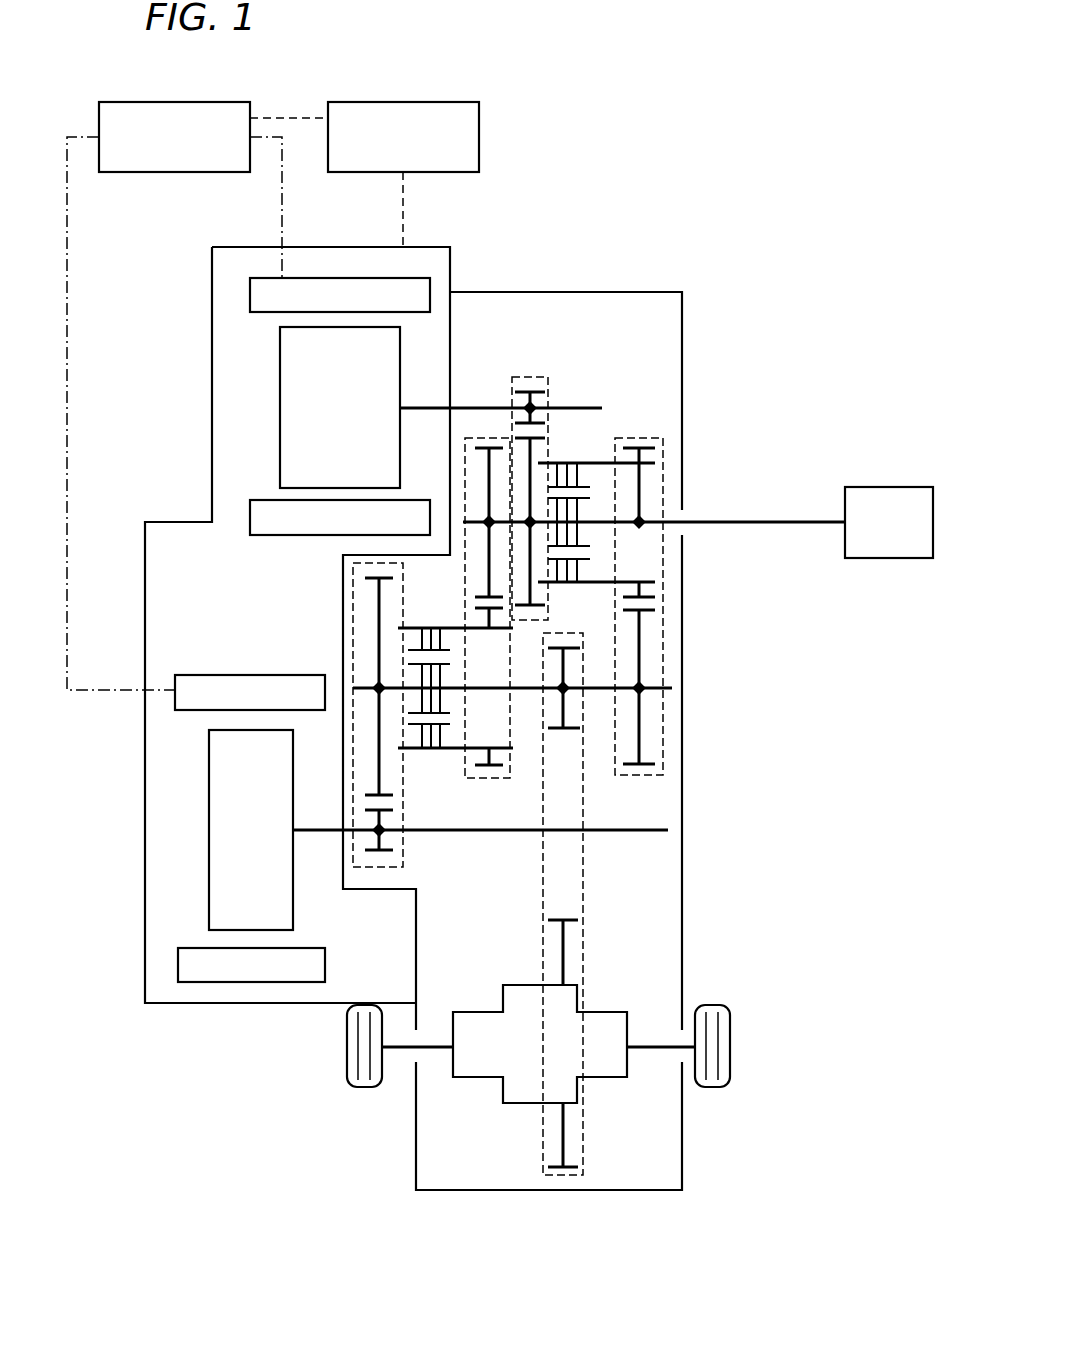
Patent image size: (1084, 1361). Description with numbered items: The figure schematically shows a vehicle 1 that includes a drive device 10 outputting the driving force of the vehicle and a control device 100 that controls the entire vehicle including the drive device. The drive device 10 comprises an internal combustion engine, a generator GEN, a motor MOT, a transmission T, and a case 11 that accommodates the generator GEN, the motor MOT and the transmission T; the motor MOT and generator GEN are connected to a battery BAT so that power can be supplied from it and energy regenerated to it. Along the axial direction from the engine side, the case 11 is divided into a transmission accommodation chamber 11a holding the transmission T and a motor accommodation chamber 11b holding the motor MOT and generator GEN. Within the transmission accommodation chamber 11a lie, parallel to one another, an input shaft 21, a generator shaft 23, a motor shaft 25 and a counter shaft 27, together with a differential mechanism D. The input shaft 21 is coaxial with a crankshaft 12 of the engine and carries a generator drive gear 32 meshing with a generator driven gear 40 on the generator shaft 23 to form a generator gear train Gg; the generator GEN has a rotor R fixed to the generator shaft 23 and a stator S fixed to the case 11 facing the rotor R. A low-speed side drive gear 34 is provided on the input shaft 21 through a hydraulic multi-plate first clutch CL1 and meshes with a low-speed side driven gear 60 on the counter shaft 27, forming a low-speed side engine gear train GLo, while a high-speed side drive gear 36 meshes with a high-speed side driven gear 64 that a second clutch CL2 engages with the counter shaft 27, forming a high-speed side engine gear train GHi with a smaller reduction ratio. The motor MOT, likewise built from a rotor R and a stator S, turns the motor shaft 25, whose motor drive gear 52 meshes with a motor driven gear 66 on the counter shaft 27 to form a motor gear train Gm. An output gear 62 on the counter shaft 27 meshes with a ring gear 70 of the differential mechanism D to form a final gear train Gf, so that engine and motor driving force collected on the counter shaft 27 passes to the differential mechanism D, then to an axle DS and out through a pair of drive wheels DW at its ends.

The vehicle 1 is at (612, 118).
The drive device 10 is at (497, 266).
The control device 100 is at (446, 100).
The case 11 is at (682, 322).
The transmission accommodation chamber 11a is at (660, 880).
The motor accommodation chamber 11b is at (186, 553).
The crankshaft 12 is at (783, 521).
The input shaft 21 is at (670, 521).
The generator shaft 23 is at (602, 408).
The motor shaft 25 is at (650, 830).
The counter shaft 27 is at (668, 690).
The generator drive gear 32 is at (545, 440).
The low-speed side drive gear 34 is at (651, 448).
The high-speed side drive gear 36 is at (476, 448).
The generator driven gear 40 is at (527, 392).
The motor drive gear 52 is at (383, 851).
The low-speed side driven gear 60 is at (663, 617).
The output gear 62 is at (577, 648).
The high-speed side driven gear 64 is at (497, 778).
The motor driven gear 66 is at (391, 578).
The ring gear 70 is at (558, 920).
The battery BAT is at (174, 137).
The generator GEN is at (250, 395).
The motor MOT is at (168, 673).
The stator S is at (252, 292).
The rotor R is at (295, 425).
The transmission T is at (587, 330).
The generator gear train Gg is at (567, 750).
The low-speed side engine gear train GLo is at (702, 660).
The high-speed side engine gear train GHi is at (464, 786).
The motor gear train Gm is at (404, 758).
The final gear train Gf is at (582, 882).
The first clutch CL1 is at (594, 484).
The second clutch CL2 is at (414, 645).
The differential mechanism D is at (502, 980).
The axle DS is at (440, 1052).
The drive wheel DW is at (345, 1065).